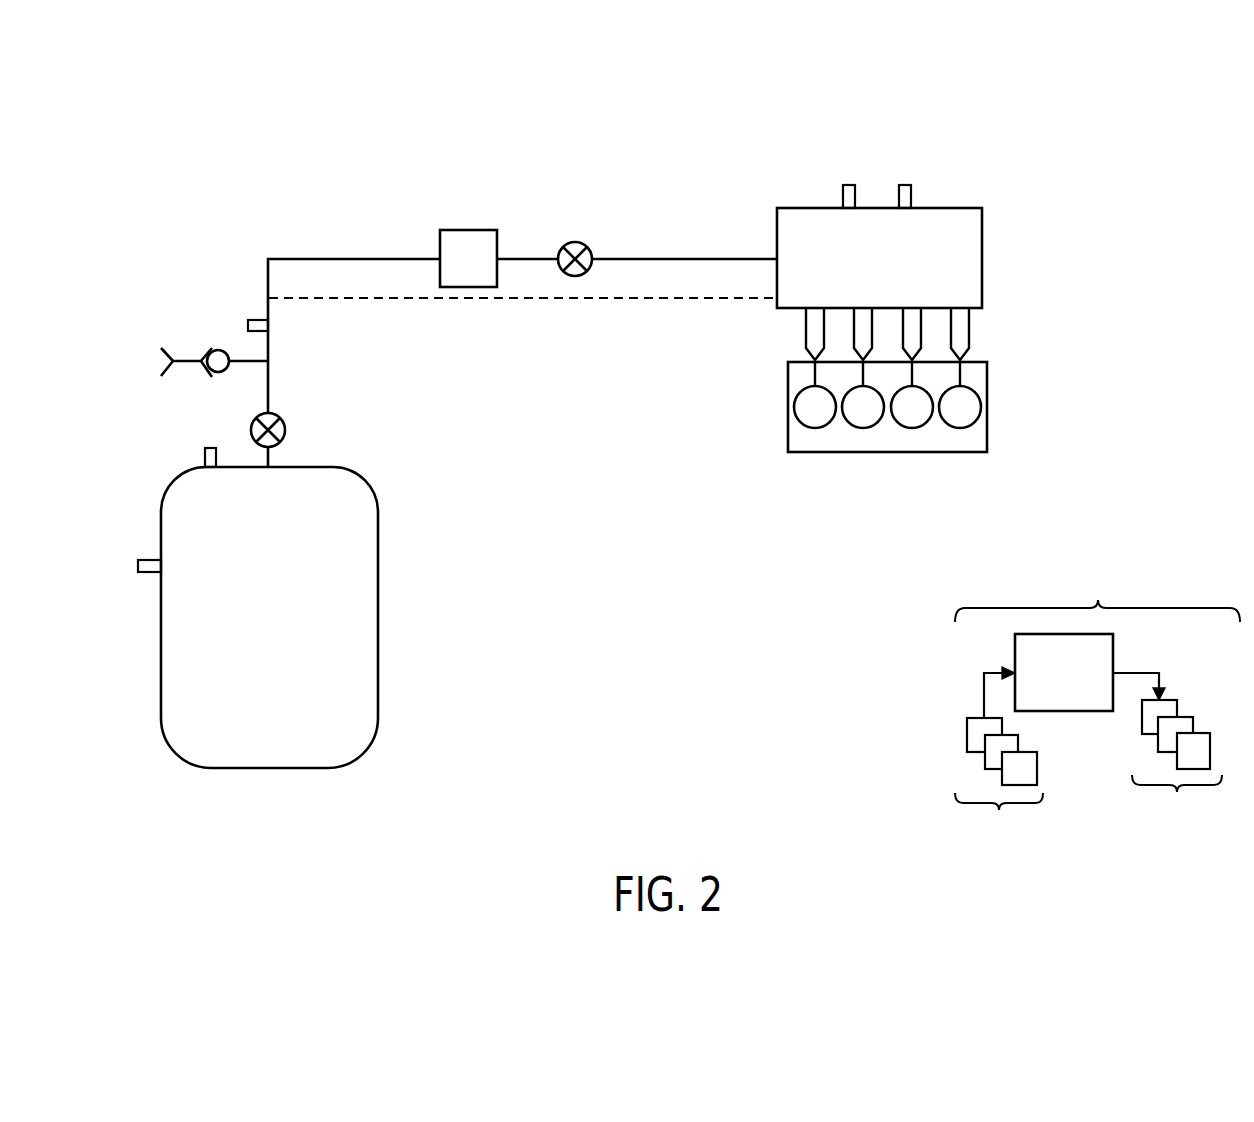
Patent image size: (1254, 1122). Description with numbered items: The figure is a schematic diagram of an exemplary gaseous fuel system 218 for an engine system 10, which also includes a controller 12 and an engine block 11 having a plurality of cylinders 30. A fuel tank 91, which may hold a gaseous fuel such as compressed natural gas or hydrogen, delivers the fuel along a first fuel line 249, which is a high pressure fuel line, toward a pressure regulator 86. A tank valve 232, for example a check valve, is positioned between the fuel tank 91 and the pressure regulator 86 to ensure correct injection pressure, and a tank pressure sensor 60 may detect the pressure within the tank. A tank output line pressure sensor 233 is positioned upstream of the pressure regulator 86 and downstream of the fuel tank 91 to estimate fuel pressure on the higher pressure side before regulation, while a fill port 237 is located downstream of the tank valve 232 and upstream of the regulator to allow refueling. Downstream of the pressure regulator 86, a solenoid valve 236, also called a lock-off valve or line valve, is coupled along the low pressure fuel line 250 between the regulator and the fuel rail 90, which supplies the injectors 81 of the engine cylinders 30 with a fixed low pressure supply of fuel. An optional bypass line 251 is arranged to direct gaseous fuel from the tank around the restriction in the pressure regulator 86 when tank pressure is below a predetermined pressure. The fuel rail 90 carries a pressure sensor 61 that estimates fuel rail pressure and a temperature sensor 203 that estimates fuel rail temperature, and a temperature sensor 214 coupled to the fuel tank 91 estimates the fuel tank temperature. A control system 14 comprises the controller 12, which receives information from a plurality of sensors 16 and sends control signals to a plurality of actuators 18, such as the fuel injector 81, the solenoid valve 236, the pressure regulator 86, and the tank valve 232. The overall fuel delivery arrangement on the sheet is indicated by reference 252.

The engine system 10 is at (1088, 338).
The engine block 11 is at (987, 435).
The controller 12 is at (1074, 676).
The control system 14 is at (1097, 587).
The sensors 16 is at (999, 786).
The actuators 18 is at (1177, 768).
The cylinders 30 is at (793, 411).
The tank pressure sensor 60 is at (205, 450).
The pressure sensor 61 is at (848, 185).
The fuel injector 81 is at (970, 327).
The pressure regulator 86 is at (468, 258).
The fuel rail 90 is at (793, 207).
The fuel tank 91 is at (350, 470).
The temperature sensor 203 is at (903, 185).
The temperature sensor 214 is at (147, 560).
The gaseous fuel system 218 is at (237, 158).
The tank valve 232 is at (254, 417).
The tank output line pressure sensor 233 is at (252, 320).
The solenoid valve 236 is at (583, 241).
The fill port 237 is at (192, 363).
The first fuel line 249 is at (327, 259).
The low pressure fuel line 250 is at (653, 259).
The bypass line 251 is at (650, 300).
The fuel delivery system 252 is at (683, 131).